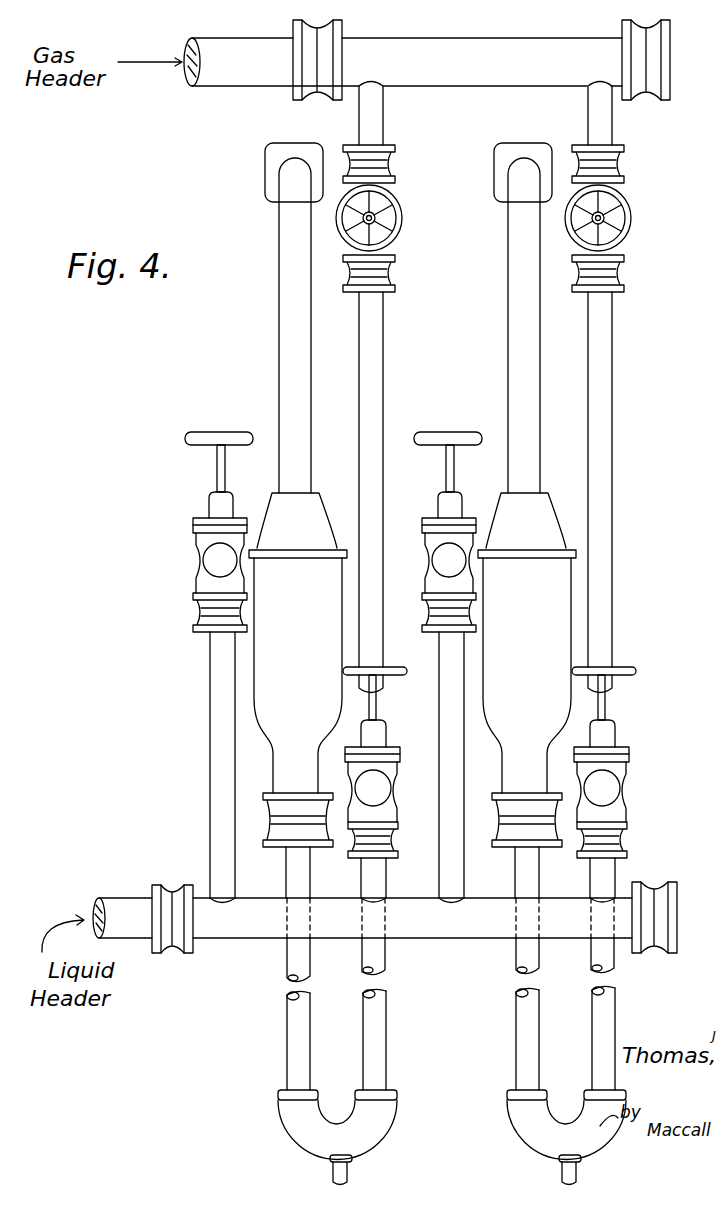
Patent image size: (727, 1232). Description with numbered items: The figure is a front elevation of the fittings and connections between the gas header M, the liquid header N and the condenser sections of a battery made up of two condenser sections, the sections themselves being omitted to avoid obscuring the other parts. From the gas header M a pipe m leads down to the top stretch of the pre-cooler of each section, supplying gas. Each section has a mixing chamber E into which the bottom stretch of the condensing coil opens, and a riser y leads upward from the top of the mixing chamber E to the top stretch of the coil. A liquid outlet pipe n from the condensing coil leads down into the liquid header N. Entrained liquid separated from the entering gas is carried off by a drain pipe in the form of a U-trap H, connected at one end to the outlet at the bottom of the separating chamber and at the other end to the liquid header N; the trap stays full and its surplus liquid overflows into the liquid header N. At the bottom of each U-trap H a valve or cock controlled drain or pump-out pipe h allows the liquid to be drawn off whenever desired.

The gas header M is at (462, 78).
The pipe m is at (627, 347).
The riser y is at (517, 330).
The liquid outlet pipe n is at (443, 692).
The mixing chamber E is at (412, 737).
The liquid header N is at (453, 933).
The U-trap H is at (530, 1117).
The drain or pump-out pipe h is at (560, 1173).